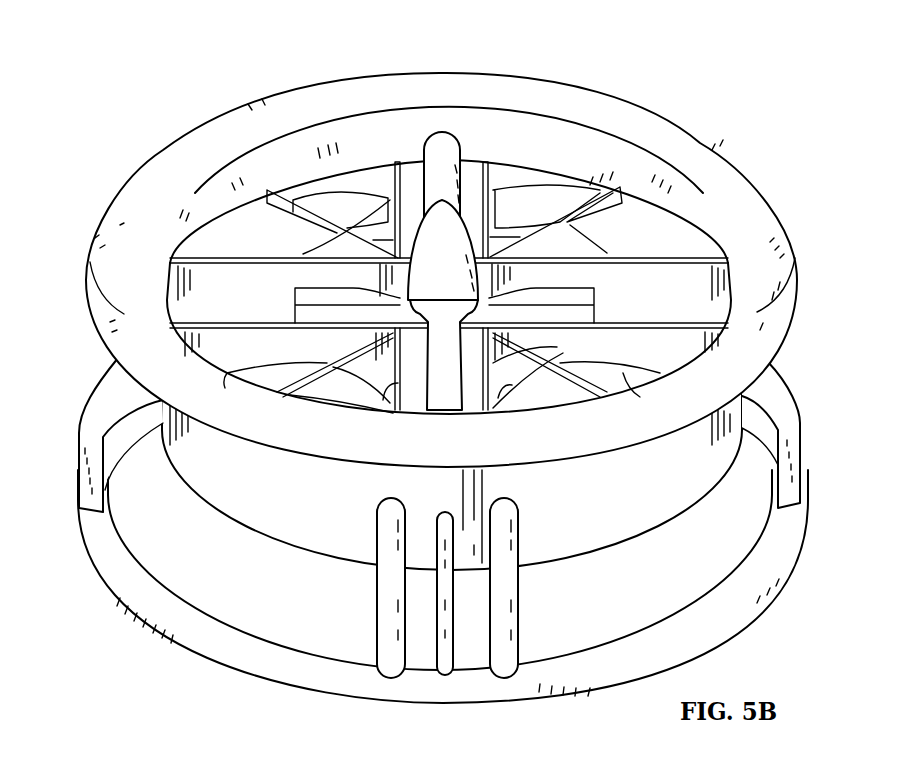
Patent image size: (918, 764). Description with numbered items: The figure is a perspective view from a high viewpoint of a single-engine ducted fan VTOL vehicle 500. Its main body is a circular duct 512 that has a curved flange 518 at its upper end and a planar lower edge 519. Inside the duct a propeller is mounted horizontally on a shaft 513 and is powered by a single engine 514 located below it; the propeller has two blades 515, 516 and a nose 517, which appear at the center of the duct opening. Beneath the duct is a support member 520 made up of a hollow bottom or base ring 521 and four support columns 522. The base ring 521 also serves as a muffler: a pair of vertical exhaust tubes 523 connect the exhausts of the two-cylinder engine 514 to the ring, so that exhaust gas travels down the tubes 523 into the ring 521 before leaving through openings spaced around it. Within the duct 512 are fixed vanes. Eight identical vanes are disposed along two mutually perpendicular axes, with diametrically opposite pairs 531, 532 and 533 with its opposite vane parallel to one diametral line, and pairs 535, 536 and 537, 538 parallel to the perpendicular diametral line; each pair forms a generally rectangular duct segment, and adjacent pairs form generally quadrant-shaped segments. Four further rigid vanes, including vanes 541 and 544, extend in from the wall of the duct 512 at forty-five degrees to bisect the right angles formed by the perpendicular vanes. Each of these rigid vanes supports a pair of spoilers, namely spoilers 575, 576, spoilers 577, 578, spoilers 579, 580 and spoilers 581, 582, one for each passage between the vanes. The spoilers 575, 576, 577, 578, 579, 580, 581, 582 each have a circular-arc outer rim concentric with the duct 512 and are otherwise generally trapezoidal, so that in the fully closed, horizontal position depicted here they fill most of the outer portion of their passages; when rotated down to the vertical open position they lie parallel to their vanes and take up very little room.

The single-engine ducted fan VTOL vehicle 500 is at (442, 382).
The duct 512 is at (455, 250).
The shaft 513 is at (415, 397).
The engine 514 is at (290, 285).
The blade 515 is at (447, 136).
The blade 516 is at (443, 405).
The nose 517 is at (423, 267).
The curved flange 518 is at (753, 187).
The planar lower edge 519 is at (630, 440).
The support member 520 is at (744, 644).
The base ring 521 is at (174, 674).
The support columns 522 is at (59, 398).
The vertical exhaust tubes 523 is at (540, 618).
The fixed vane 531 is at (650, 315).
The fixed vane 532 is at (628, 361).
The fixed vane 533 is at (200, 297).
The fixed vane 535 is at (477, 163).
The fixed vane 536 is at (406, 163).
The fixed vane 537 is at (533, 363).
The fixed vane 538 is at (369, 426).
The rigid vane 541 is at (600, 397).
The rigid vane 544 is at (603, 178).
The spoiler 575 is at (623, 377).
The spoiler 576 is at (533, 418).
The spoiler 577 is at (303, 425).
The spoiler 578 is at (243, 398).
The spoiler 579 is at (248, 248).
The spoiler 580 is at (312, 200).
The spoiler 581 is at (517, 193).
The spoiler 582 is at (607, 244).